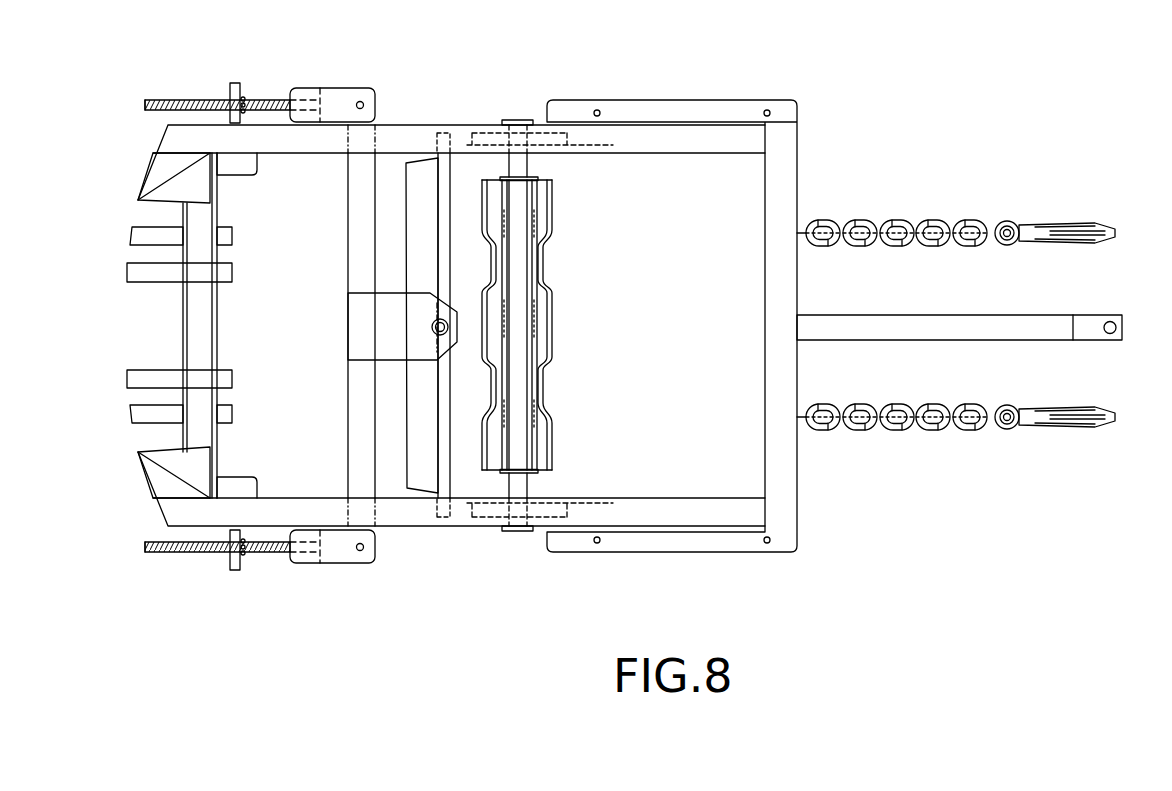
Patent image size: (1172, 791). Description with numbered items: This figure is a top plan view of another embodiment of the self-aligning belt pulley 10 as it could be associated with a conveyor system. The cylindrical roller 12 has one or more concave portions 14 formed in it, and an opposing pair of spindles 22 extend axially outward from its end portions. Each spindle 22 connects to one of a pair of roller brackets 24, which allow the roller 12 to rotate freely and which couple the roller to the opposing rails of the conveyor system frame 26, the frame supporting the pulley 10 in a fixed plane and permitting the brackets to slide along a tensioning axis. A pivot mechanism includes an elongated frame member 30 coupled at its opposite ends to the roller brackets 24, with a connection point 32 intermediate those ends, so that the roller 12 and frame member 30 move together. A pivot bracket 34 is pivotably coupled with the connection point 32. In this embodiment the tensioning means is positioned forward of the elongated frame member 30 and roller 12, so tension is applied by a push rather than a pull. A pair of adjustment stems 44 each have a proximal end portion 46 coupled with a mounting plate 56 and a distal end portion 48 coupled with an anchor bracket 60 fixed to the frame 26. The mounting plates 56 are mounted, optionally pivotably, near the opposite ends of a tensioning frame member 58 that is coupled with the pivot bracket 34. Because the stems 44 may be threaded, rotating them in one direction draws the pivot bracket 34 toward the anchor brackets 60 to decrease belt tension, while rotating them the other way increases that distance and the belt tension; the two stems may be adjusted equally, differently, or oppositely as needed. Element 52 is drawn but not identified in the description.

The self-aligning belt pulley 10 is at (976, 594).
The cylindrical roller 12 is at (580, 210).
The concave portions 14 is at (584, 259).
The spindles 22 is at (528, 490).
The roller brackets 24 is at (484, 520).
The conveyor system frame 26 is at (396, 125).
The elongated frame member 30 is at (457, 392).
The connection point 32 is at (438, 318).
The pivot bracket 34 is at (378, 331).
The adjustment stems 44 is at (171, 100).
The proximal end portion 46 is at (302, 140).
The distal end portion 48 is at (130, 98).
The rear mounting plate 52 is at (797, 175).
The mounting plate 56 is at (325, 88).
The tensioning frame member 58 is at (358, 435).
The anchor brackets 60 is at (239, 83).